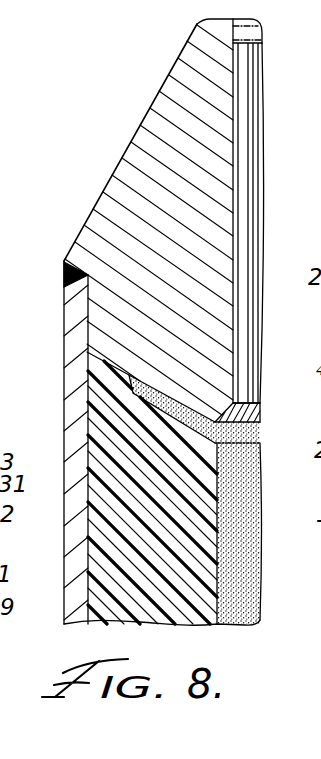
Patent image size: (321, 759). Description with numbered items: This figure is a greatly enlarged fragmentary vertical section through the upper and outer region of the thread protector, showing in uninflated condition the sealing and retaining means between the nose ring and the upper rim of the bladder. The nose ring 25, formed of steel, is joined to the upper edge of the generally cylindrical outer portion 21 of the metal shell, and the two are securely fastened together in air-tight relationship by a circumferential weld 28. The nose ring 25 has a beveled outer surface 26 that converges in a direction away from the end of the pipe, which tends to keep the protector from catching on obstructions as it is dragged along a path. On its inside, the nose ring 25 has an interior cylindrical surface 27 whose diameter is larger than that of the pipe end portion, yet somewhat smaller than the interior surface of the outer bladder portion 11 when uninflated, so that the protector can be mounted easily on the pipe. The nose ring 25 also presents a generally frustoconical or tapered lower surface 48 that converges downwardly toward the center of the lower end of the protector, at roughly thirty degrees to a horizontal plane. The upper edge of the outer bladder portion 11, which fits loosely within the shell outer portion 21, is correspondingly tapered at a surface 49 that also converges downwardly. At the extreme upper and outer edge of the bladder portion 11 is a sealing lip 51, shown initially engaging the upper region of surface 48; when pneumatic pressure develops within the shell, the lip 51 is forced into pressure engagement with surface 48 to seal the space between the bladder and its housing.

The outer portion of bladder 11 is at (99, 527).
The outer portion of shell 21 is at (68, 429).
The nose ring 25 is at (170, 90).
The beveled outer surface 26 is at (145, 118).
The interior cylindrical surface 27 is at (250, 182).
The circumferential weld 28 is at (64, 272).
The tapered lower surface 48 is at (162, 396).
The tapered surface 49 is at (193, 423).
The sealing lip 51 is at (117, 369).